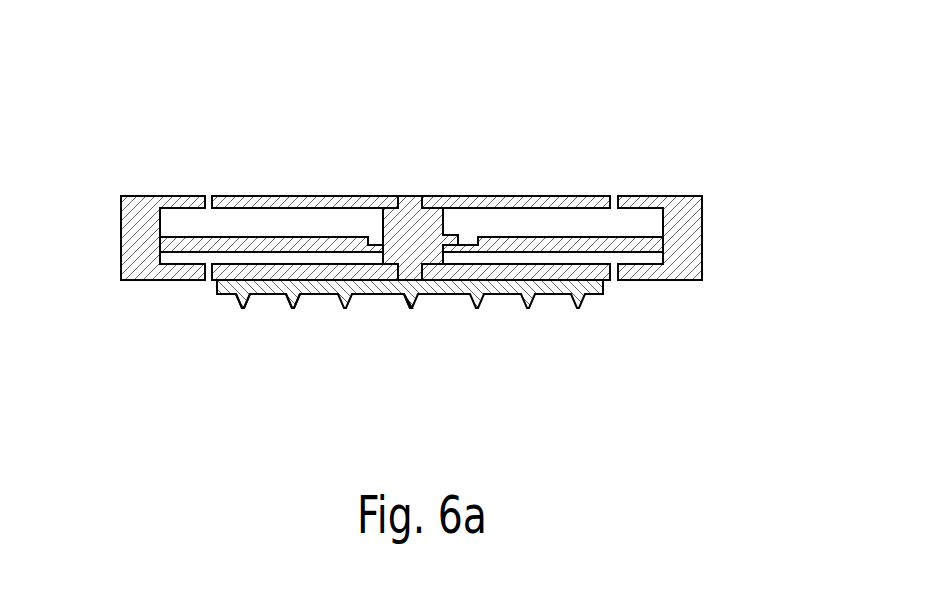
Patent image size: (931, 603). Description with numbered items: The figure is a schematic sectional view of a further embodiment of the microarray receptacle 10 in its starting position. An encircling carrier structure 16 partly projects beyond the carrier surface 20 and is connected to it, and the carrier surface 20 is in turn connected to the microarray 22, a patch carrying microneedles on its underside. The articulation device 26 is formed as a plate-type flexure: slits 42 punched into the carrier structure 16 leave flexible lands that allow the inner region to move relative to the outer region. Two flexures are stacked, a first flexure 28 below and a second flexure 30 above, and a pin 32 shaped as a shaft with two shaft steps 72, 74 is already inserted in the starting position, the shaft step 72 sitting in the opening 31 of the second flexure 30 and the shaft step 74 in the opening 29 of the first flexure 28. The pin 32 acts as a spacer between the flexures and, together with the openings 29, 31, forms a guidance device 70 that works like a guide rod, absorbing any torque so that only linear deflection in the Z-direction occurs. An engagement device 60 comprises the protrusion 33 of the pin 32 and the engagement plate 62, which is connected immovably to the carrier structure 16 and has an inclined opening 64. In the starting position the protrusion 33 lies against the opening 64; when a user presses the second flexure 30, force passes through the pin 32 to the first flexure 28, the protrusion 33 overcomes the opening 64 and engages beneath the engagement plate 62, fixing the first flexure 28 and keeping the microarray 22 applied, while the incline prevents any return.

The microarray receptacle 10 is at (398, 232).
The carrier structure 16 is at (142, 248).
The carrier surface 20 is at (548, 282).
The microarray 22 is at (265, 300).
The articulation device 26 is at (566, 105).
The first flexure 28 is at (150, 280).
The opening 29 is at (405, 296).
The second flexure 30 is at (603, 195).
The opening 31 is at (421, 192).
The pin 32 is at (385, 252).
The protrusion 33 is at (458, 236).
The slit 42 is at (209, 196).
The engagement device 60 is at (363, 236).
The engagement plate 62 is at (615, 237).
The opening 64 is at (445, 255).
The guidance device 70 is at (447, 222).
The shaft step 72 is at (405, 187).
The shaft step 74 is at (428, 292).